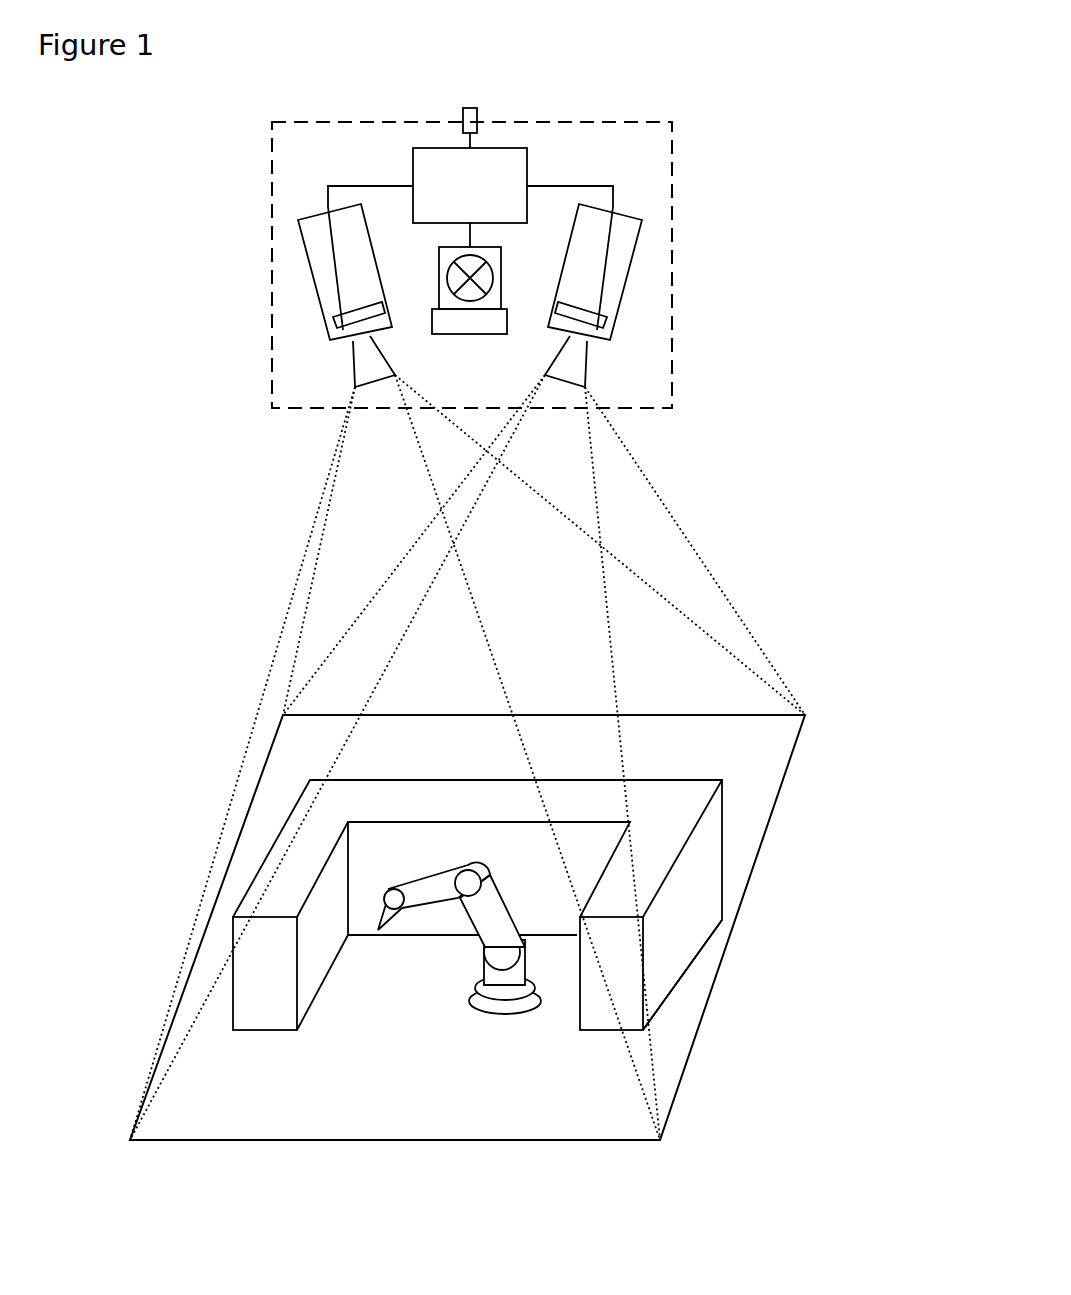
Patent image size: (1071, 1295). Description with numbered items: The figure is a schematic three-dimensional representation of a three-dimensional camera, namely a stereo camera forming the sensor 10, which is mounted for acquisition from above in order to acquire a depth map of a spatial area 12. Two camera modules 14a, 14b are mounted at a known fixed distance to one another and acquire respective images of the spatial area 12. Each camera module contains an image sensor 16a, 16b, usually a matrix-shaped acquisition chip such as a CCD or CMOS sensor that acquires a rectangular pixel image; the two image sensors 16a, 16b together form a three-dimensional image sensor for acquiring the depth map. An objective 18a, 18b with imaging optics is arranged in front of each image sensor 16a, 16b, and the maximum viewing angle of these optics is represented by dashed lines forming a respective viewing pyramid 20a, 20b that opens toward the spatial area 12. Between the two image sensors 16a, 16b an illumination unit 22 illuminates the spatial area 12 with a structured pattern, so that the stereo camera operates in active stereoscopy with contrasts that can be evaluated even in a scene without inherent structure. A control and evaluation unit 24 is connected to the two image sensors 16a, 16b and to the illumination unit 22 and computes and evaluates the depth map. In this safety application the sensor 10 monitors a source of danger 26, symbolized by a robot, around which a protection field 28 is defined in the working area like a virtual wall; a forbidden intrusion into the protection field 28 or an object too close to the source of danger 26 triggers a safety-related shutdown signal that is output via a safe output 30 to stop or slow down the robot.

The sensor 10 is at (672, 140).
The spatial area 12 is at (777, 567).
The camera module 14a is at (322, 277).
The camera module 14b is at (633, 247).
The image sensor 16a is at (337, 323).
The image sensor 16b is at (612, 317).
The objective 18a is at (360, 365).
The objective 18b is at (593, 387).
The viewing pyramid 20a is at (295, 580).
The viewing pyramid 20b is at (697, 553).
The illumination unit 22 is at (520, 297).
The control and evaluation unit 24 is at (427, 158).
The source of danger 26 is at (502, 990).
The protection field 28 is at (247, 1015).
The safe output 30 is at (477, 120).